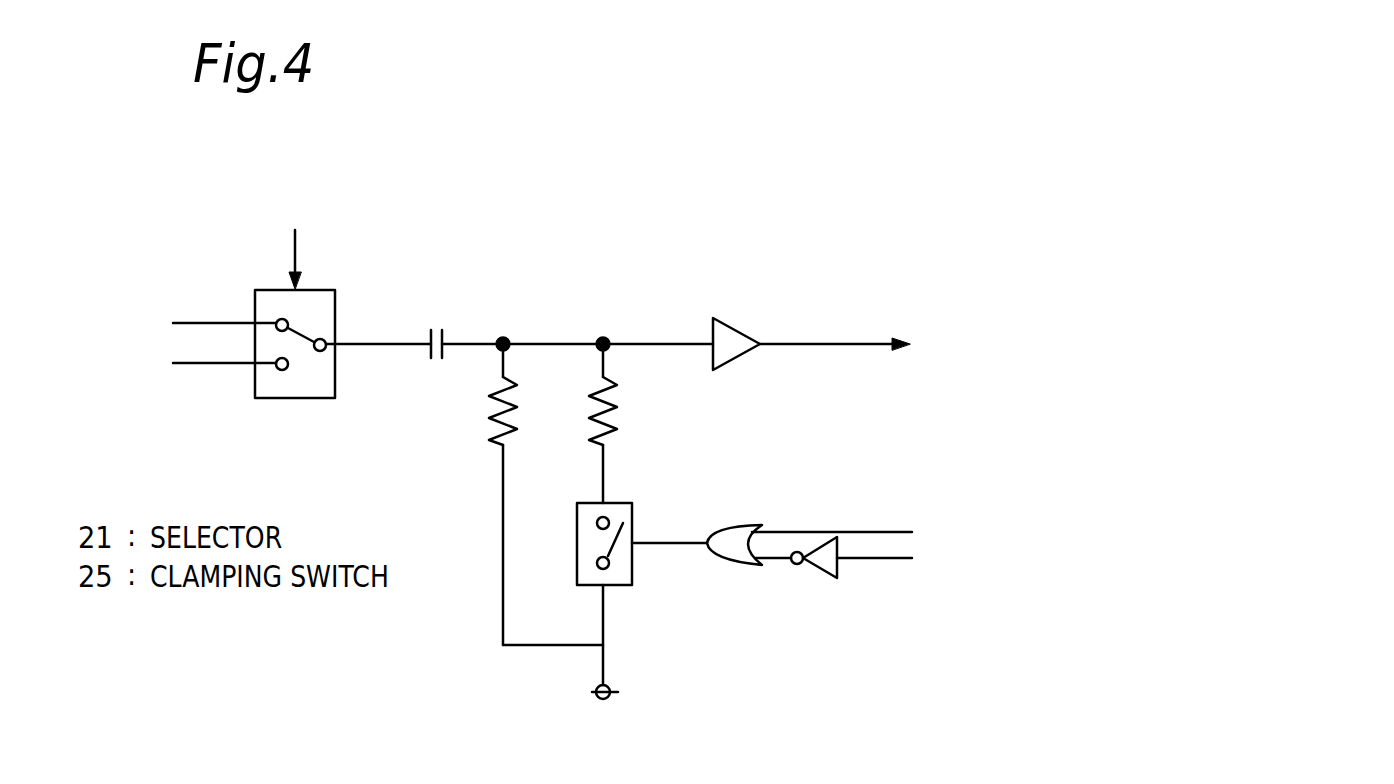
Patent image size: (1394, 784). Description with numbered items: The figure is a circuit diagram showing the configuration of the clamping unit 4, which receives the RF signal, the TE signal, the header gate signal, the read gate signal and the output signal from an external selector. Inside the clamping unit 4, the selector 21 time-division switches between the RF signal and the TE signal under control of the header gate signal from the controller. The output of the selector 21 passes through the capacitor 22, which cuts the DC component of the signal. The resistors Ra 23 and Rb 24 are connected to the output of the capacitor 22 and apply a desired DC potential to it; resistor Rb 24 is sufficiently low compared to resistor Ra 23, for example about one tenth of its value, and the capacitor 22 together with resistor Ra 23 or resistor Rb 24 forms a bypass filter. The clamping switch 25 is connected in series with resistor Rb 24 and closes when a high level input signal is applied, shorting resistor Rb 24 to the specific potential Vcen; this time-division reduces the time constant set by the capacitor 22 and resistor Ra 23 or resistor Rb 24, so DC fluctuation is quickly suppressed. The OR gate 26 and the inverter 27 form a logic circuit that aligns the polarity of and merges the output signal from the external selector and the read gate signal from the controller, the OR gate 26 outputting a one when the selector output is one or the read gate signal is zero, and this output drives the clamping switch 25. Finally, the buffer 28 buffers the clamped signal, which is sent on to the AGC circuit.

The clamping unit 4 is at (423, 668).
The selector 21 is at (317, 290).
The capacitor 22 is at (437, 328).
The resistor Ra 23 is at (517, 398).
The resistor Rb 24 is at (617, 398).
The clamping switch 25 is at (620, 503).
The OR gate 26 is at (738, 524).
The inverter 27 is at (823, 568).
The buffer 28 is at (728, 333).